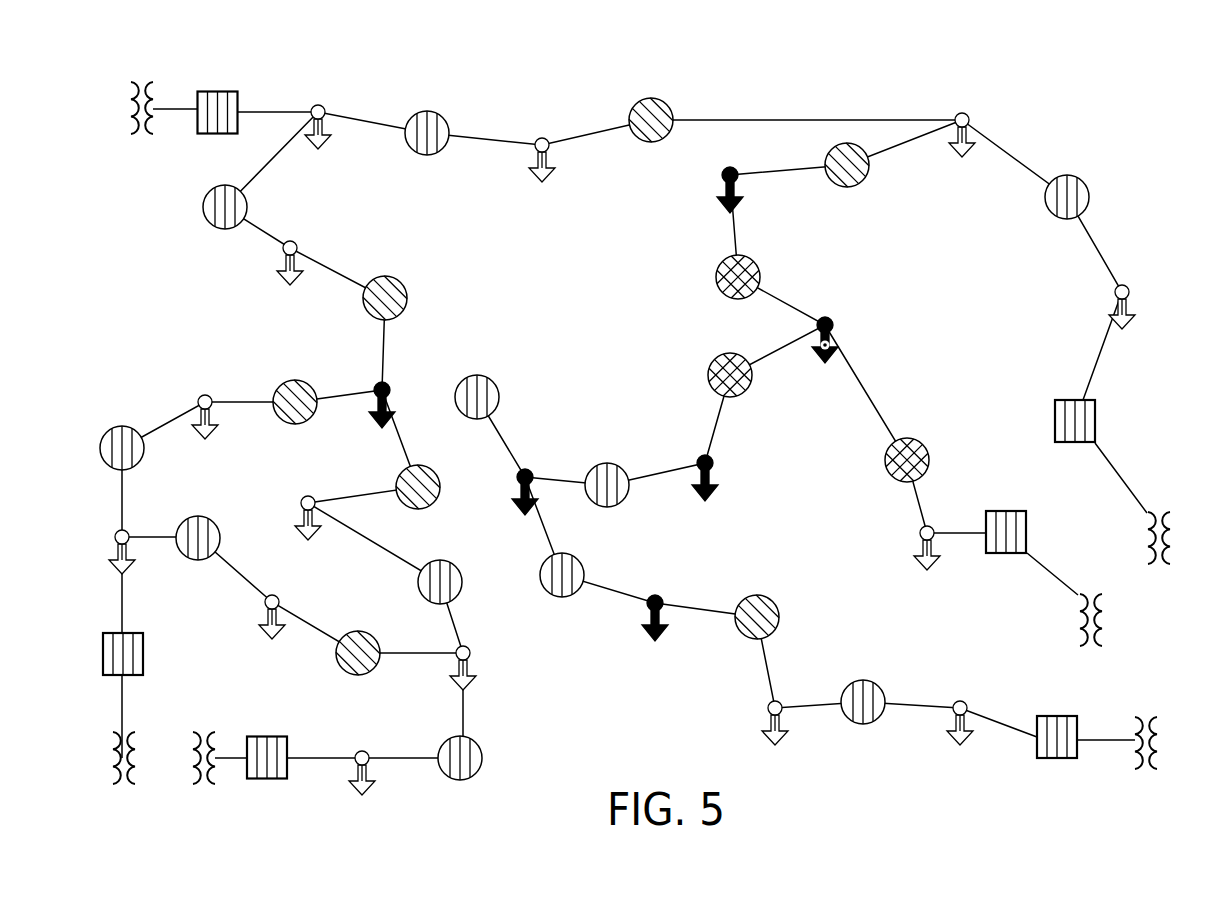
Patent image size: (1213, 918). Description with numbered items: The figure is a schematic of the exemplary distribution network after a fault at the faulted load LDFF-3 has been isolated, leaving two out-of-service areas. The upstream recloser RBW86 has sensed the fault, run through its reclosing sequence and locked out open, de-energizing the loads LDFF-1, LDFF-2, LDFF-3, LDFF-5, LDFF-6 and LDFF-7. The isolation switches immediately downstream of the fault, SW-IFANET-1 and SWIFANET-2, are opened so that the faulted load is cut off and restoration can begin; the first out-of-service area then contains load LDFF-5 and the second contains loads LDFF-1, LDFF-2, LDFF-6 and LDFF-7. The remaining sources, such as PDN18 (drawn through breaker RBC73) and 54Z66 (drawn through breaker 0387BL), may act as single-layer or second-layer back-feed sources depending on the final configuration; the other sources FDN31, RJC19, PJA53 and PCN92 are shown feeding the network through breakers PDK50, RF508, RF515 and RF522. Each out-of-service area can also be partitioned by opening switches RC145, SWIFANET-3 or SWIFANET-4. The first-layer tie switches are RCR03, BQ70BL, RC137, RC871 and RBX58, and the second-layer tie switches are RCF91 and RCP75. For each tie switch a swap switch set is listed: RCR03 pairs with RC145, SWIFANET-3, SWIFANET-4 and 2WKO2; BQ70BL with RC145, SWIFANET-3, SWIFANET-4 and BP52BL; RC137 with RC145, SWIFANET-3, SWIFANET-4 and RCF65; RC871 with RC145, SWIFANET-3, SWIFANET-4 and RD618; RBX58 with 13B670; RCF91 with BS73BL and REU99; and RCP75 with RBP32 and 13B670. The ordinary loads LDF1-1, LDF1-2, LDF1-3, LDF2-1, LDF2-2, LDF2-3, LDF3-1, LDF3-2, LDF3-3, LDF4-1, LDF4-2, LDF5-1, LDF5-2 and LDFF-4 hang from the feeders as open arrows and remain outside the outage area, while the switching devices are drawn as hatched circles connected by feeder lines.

The swap switch 2WKO2 is at (262, 206).
The swap switch RBP32 is at (427, 114).
The second layer tie switch RCP75 is at (650, 99).
The first layer tie switch RBX58 is at (850, 187).
The swap switch 13B670 is at (1103, 193).
The first layer tie switch RCR03 is at (421, 296).
The isolation switch SW-IFANET-1 is at (782, 274).
The first layer tie switch BQ70BL is at (300, 423).
The swap switch BP52BL is at (130, 430).
The switch RC145 is at (512, 394).
The isolation switch SWIFANET-2 is at (682, 382).
The first layer tie switch RC137 is at (430, 508).
The switch SWIFANET-4 is at (627, 466).
The upstream recloser RBW86 is at (943, 454).
The swap switch BS73BL is at (192, 518).
The swap switch RCF65 is at (475, 590).
The switch SWIFANET-3 is at (603, 569).
The first layer tie switch RC871 is at (793, 614).
The second layer tie switch RCF91 is at (357, 632).
The swap switch RD618 is at (893, 685).
The swap switch REU99 is at (492, 769).
The load LDF3-2 is at (349, 146).
The load LDF3-3 is at (542, 191).
The load LDF4-1 is at (967, 167).
The load LDF3-1 is at (292, 294).
The load LDF4-2 is at (1149, 315).
The load LDF2-1 is at (204, 388).
The load LDF1-3 is at (281, 524).
The load LDF2-2 is at (94, 563).
The load LDFF-4 is at (897, 561).
The load LDF2-3 is at (271, 648).
The load LDF1-2 is at (492, 676).
The load LDF5-1 is at (744, 729).
The load LDF5-2 is at (959, 755).
The load LDF1-1 is at (390, 786).
The load LDFF-5 is at (701, 195).
The faulted load LDFF-3 is at (854, 348).
The load LDFF-7 is at (412, 405).
The load LDFF-1 is at (493, 482).
The load LDFF-2 is at (731, 485).
The load LDFF-6 is at (627, 631).
The feeder breaker RBC73 is at (225, 92).
The feeder breaker 0387BL is at (161, 656).
The feeder breaker PDK50 is at (273, 783).
The feeder breaker RF508 is at (1111, 415).
The feeder breaker RF515 is at (1043, 529).
The feeder breaker RF522 is at (1055, 762).
The back-feed source PDN18 is at (143, 131).
The back-feed source 54Z66 is at (135, 782).
The power source / transformer FDN31 is at (210, 736).
The power source / transformer RJC19 is at (1170, 559).
The power source / transformer PJA53 is at (1100, 641).
The power source / transformer PCN92 is at (1147, 766).